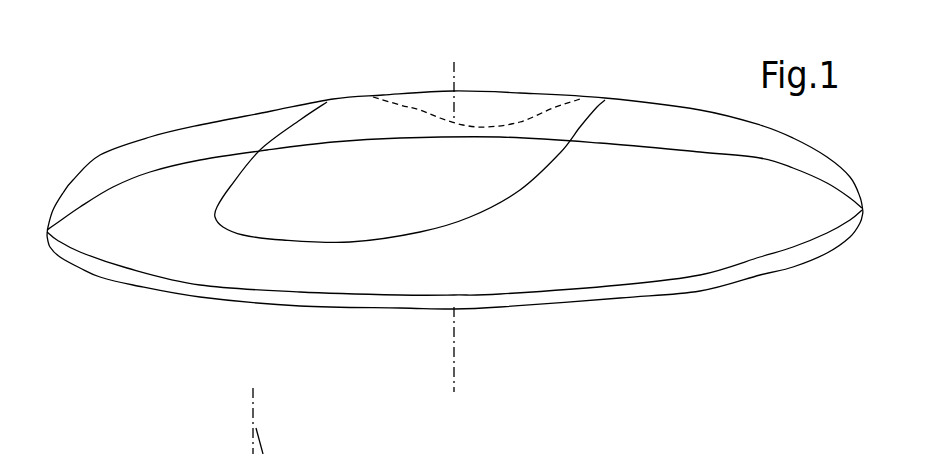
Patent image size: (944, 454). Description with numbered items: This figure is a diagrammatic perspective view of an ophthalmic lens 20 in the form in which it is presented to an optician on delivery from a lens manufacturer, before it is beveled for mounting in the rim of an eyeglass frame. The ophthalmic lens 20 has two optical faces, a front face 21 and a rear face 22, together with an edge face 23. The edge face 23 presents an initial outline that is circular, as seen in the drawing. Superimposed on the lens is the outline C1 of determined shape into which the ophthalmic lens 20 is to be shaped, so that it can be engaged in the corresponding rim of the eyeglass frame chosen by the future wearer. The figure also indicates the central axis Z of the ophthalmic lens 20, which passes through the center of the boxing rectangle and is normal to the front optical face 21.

The ophthalmic lens 20 is at (455, 236).
The front face 21 is at (513, 105).
The rear face 22 is at (362, 310).
The edge face 23 is at (597, 295).
The outline C1 is at (281, 131).
The central axis Z is at (455, 347).